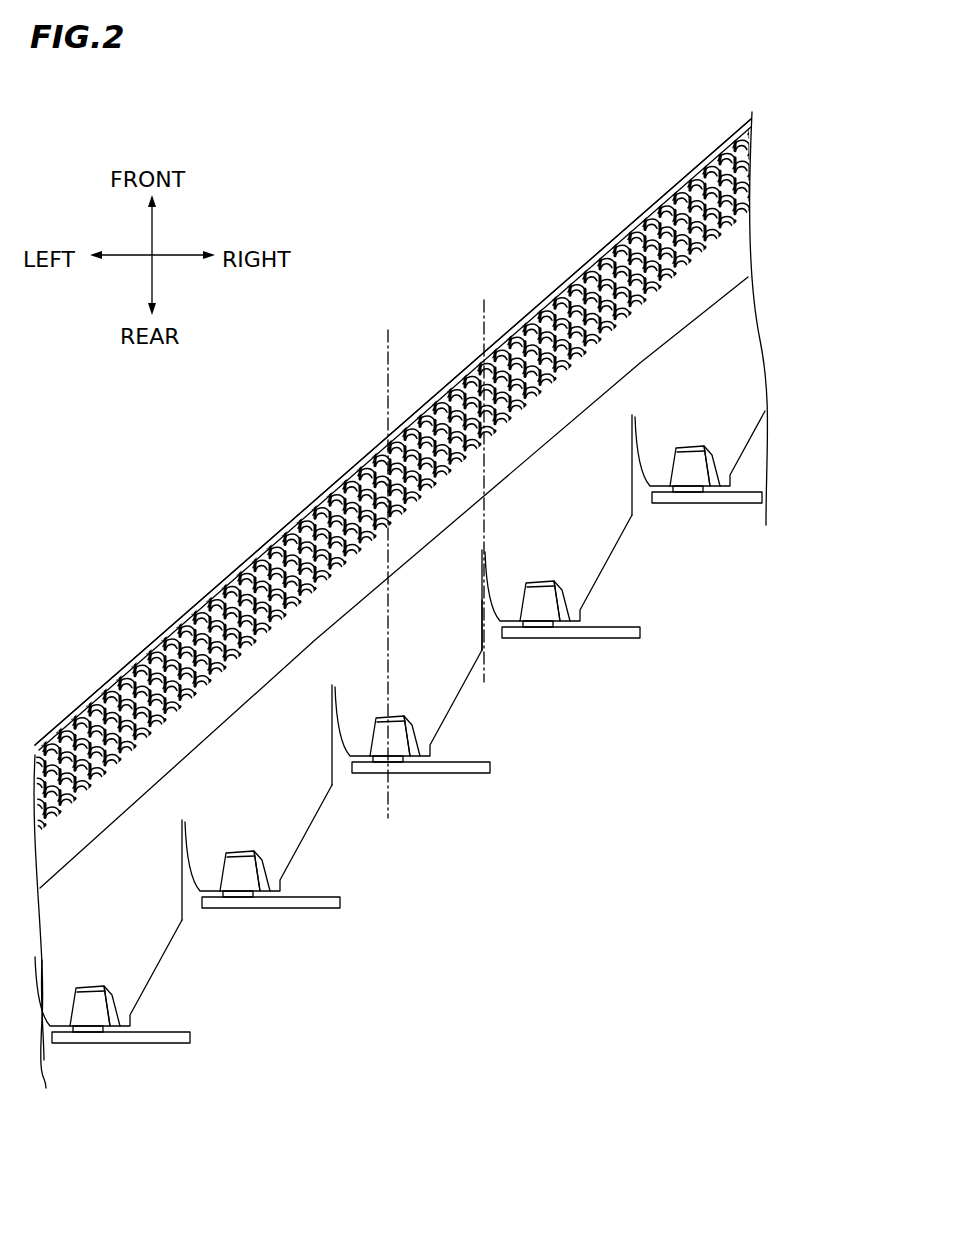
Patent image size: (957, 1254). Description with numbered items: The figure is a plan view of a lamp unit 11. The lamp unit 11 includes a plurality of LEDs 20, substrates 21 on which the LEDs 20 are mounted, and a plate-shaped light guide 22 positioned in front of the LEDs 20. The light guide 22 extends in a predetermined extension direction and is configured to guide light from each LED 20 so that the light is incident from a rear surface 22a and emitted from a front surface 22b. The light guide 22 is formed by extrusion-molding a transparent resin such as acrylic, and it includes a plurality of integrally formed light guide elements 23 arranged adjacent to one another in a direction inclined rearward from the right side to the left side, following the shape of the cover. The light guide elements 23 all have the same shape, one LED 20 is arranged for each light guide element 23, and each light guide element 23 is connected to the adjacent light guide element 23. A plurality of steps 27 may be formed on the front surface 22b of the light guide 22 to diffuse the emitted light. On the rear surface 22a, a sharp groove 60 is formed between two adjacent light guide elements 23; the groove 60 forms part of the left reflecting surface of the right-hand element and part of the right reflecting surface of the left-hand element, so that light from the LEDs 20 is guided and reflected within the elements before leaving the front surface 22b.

The lamp unit 11 is at (551, 236).
The light guide 22 is at (750, 258).
The rear surface 22a is at (43, 1040).
The front surface 22b is at (271, 517).
The steps 27 is at (454, 393).
The light guide elements 23 is at (180, 974).
The LEDs 20 is at (97, 1026).
The substrates 21 is at (179, 1032).
The groove 60 is at (493, 640).